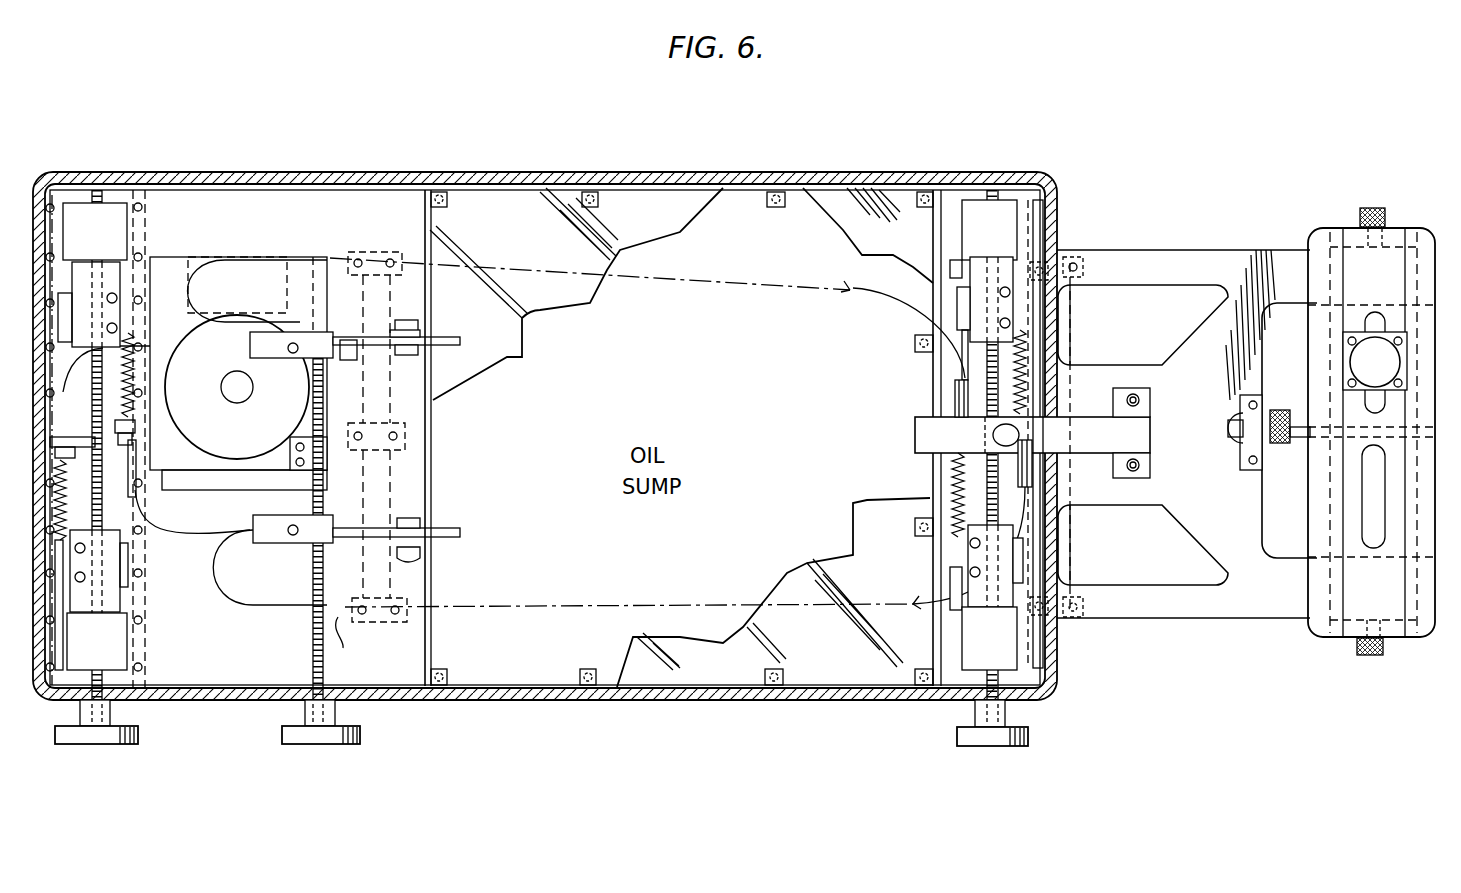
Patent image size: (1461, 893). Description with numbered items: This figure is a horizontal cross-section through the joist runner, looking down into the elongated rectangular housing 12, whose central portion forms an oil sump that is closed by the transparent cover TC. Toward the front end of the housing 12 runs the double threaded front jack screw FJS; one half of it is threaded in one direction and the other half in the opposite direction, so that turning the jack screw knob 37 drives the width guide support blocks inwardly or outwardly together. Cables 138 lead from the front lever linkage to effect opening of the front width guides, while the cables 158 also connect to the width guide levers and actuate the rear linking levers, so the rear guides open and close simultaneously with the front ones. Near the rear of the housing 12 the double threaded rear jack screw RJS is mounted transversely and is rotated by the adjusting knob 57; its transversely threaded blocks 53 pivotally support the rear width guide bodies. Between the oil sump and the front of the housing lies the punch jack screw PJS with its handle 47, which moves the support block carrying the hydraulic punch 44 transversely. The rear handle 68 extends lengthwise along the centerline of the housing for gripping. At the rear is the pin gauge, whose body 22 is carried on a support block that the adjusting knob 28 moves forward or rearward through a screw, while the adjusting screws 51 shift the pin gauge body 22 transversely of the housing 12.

The housing 12 is at (697, 172).
The pin gauge body 22 is at (1385, 363).
The adjusting knob 28 is at (1282, 447).
The jack screw knob 37 is at (120, 733).
The hydraulic punch 44 is at (243, 432).
The handle 47 is at (325, 735).
The adjusting screws 51 is at (1388, 221).
The transversely threaded blocks 53 is at (958, 310).
The adjusting knob 57 is at (983, 742).
The rear handle 68 is at (1116, 445).
The cables 138 is at (178, 540).
The cables 158 is at (858, 288).
The front jack screw FJS is at (108, 640).
The punch jack screw PJS is at (313, 570).
The rear jack screw RJS is at (987, 362).
The transparent cover TC is at (835, 675).